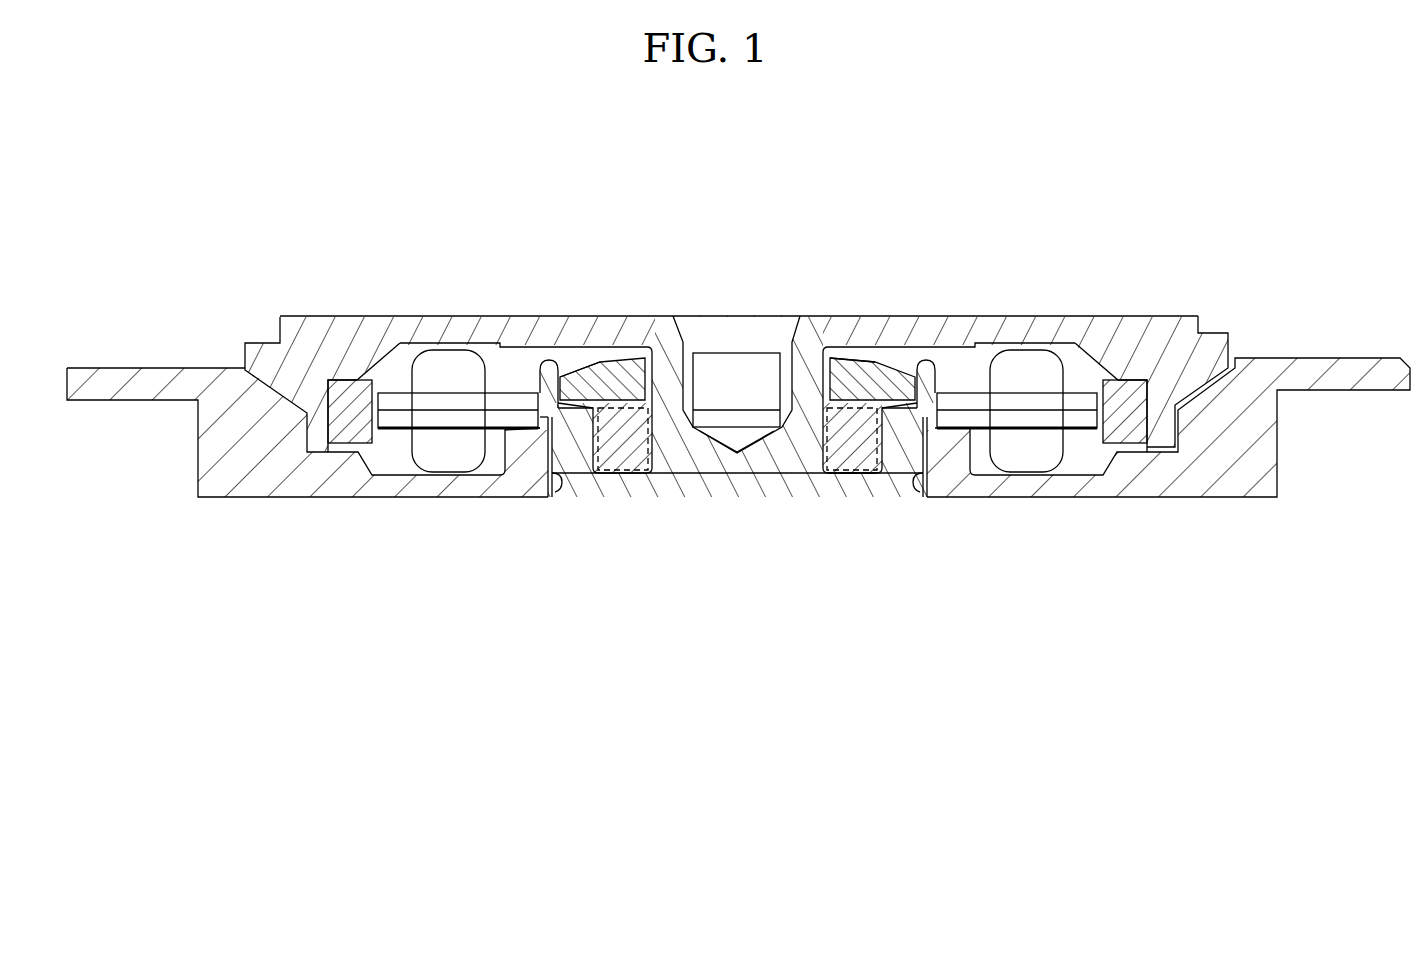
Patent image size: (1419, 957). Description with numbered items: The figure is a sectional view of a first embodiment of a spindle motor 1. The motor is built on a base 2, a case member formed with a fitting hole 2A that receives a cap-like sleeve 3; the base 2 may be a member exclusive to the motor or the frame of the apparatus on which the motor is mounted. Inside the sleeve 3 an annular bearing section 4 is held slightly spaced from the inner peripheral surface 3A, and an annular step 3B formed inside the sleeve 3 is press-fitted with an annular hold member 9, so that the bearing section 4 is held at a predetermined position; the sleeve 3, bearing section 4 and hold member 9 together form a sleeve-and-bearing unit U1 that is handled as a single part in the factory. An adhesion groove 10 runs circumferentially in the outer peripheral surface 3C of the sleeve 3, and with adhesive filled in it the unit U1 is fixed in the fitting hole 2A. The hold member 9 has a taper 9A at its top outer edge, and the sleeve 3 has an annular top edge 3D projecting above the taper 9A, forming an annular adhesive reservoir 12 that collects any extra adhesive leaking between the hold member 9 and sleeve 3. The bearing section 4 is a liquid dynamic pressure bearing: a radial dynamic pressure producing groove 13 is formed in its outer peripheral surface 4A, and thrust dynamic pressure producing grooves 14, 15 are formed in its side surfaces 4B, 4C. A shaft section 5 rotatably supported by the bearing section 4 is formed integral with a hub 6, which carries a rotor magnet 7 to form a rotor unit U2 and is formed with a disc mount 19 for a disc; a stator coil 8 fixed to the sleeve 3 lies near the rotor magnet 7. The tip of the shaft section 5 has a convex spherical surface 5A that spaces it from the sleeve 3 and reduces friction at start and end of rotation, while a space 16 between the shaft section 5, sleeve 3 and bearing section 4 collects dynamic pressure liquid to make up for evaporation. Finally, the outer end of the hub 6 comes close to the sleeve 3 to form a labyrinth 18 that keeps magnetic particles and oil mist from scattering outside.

The spindle motor 1 is at (1030, 126).
The base 2 is at (275, 500).
The fitting hole 2A is at (560, 472).
The sleeve 3 is at (605, 472).
The inner peripheral surface 3A is at (905, 445).
The annular step 3B is at (906, 365).
The outer peripheral surface 3C is at (558, 486).
The annular top edge 3D is at (547, 362).
The bearing section 4 is at (868, 478).
The outer peripheral surface 4A is at (577, 420).
The side surface 4B is at (838, 478).
The side surface 4C is at (849, 362).
The shaft section 5 is at (812, 328).
The convex-formed spherical surface 5A is at (800, 478).
The hub 6 is at (1158, 318).
The rotor magnet 7 is at (1130, 425).
The stator coil 8 is at (432, 455).
The hold member 9 is at (625, 372).
The taper 9A is at (592, 360).
The adhesion groove 10 is at (935, 440).
The adhesive reservoir 12 is at (565, 363).
The radial dynamic pressure producing groove 13 is at (545, 452).
The thrust dynamic pressure producing groove 14 is at (845, 465).
The thrust dynamic pressure producing groove 15 is at (872, 395).
The space 16 is at (658, 485).
The labyrinth 18 is at (1237, 397).
The disc mount 19 is at (262, 322).
The sleeve-and-bearing unit U1 is at (691, 514).
The rotor unit U2 is at (1032, 303).